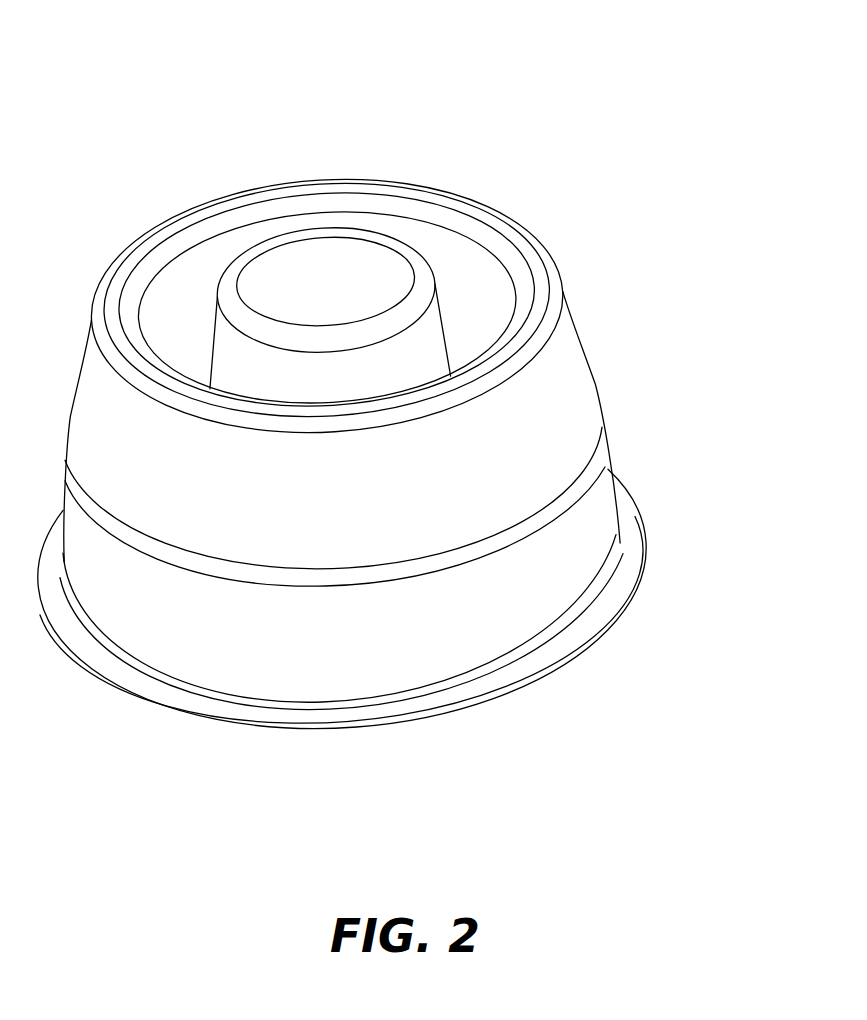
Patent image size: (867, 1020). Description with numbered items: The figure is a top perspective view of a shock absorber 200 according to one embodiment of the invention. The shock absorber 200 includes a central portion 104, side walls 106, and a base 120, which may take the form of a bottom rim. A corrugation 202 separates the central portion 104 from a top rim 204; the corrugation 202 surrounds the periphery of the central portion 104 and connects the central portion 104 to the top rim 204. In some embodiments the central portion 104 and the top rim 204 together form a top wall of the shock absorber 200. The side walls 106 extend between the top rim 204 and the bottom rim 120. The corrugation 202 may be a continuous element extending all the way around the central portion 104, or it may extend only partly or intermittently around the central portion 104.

The shock absorber 200 is at (147, 86).
The central portion 104 is at (357, 255).
The corrugation 202 is at (467, 268).
The top rim 204 is at (532, 265).
The side walls 106 is at (577, 377).
The base 120 is at (627, 517).